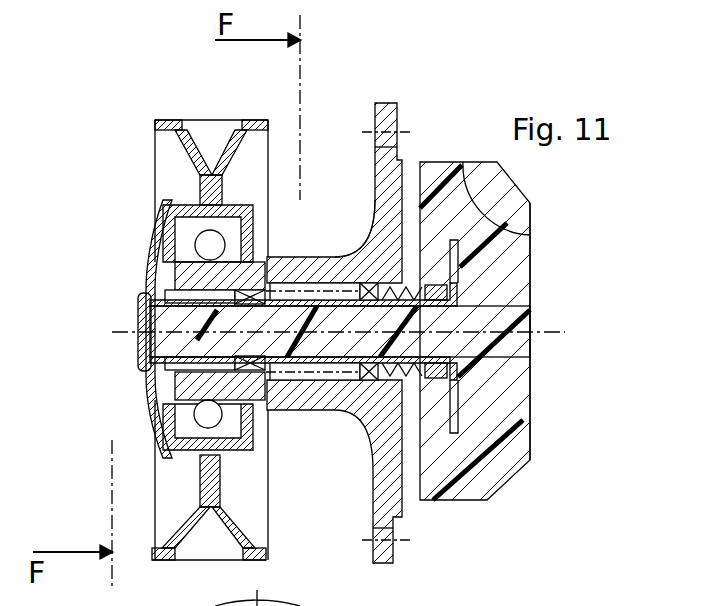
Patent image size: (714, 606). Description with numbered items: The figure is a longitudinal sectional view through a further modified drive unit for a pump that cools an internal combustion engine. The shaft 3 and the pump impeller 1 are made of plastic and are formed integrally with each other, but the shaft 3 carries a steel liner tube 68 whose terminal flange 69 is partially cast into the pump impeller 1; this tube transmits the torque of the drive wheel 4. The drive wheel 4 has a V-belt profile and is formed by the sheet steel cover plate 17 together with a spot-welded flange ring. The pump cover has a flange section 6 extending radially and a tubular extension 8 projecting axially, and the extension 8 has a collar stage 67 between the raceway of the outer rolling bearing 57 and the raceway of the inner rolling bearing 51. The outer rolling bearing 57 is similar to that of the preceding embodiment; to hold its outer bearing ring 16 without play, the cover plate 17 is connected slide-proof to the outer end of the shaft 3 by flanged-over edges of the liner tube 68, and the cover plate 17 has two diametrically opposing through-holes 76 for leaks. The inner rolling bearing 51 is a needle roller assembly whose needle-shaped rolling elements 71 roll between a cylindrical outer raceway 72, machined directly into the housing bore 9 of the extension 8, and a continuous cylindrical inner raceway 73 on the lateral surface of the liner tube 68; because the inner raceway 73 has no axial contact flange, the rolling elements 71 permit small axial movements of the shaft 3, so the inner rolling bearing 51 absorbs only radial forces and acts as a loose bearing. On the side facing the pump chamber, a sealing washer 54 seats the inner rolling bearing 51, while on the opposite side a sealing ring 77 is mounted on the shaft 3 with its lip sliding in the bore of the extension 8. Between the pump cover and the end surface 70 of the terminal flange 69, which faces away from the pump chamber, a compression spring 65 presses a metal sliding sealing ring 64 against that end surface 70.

The pump impeller 1 is at (517, 255).
The shaft 3 is at (155, 365).
The drive wheel 4 is at (172, 122).
The flange section 6 is at (398, 157).
The tubular extension 8 is at (272, 410).
The housing bore 9 is at (143, 323).
The outer bearing ring 16 is at (188, 214).
The cover plate 17 is at (160, 460).
The inner rolling bearing 51 is at (397, 515).
The sealing washer 54 is at (435, 320).
The outer rolling bearing 57 is at (198, 245).
The sealing ring 64 is at (530, 293).
The compression spring 65 is at (485, 502).
The collar stage 67 is at (222, 200).
The liner tube 68 is at (158, 390).
The terminal flange 69 is at (455, 387).
The end surface 70 is at (403, 237).
The rolling elements 71 is at (307, 413).
The outer raceway 72 is at (345, 257).
The inner raceway 73 is at (292, 290).
The through-holes 76 is at (207, 298).
The sealing ring 77 is at (258, 415).